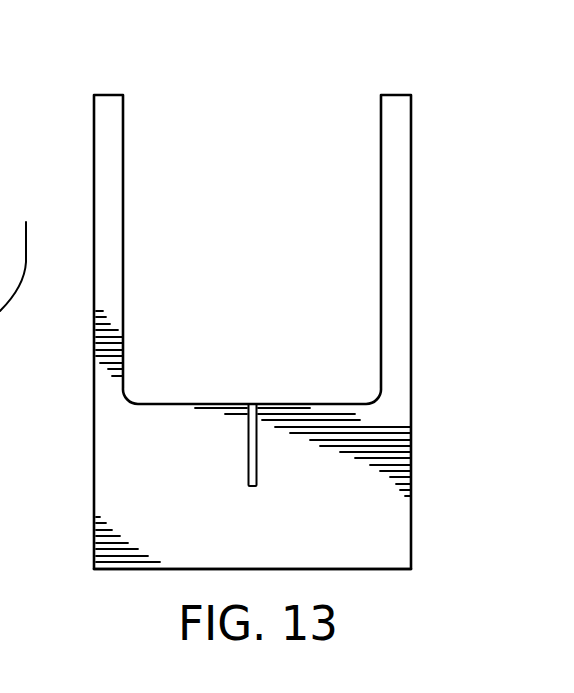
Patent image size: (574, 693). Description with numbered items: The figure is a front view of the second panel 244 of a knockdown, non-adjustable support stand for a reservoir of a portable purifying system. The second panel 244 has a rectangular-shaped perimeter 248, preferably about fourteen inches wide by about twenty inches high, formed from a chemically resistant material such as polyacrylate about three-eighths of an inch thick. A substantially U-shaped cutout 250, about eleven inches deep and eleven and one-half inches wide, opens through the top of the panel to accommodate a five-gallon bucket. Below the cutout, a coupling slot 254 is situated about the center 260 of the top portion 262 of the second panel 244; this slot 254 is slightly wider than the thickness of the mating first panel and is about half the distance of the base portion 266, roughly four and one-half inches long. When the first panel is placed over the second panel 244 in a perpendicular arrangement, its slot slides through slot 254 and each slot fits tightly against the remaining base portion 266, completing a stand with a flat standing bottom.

The second panel 244 is at (125, 571).
The rectangular-shaped perimeter 248 is at (412, 243).
The U-shaped cutout 250 is at (216, 182).
The coupling slot 254 is at (251, 404).
The center 260 is at (355, 569).
The top portion 262 is at (94, 477).
The base portion 266 is at (345, 525).